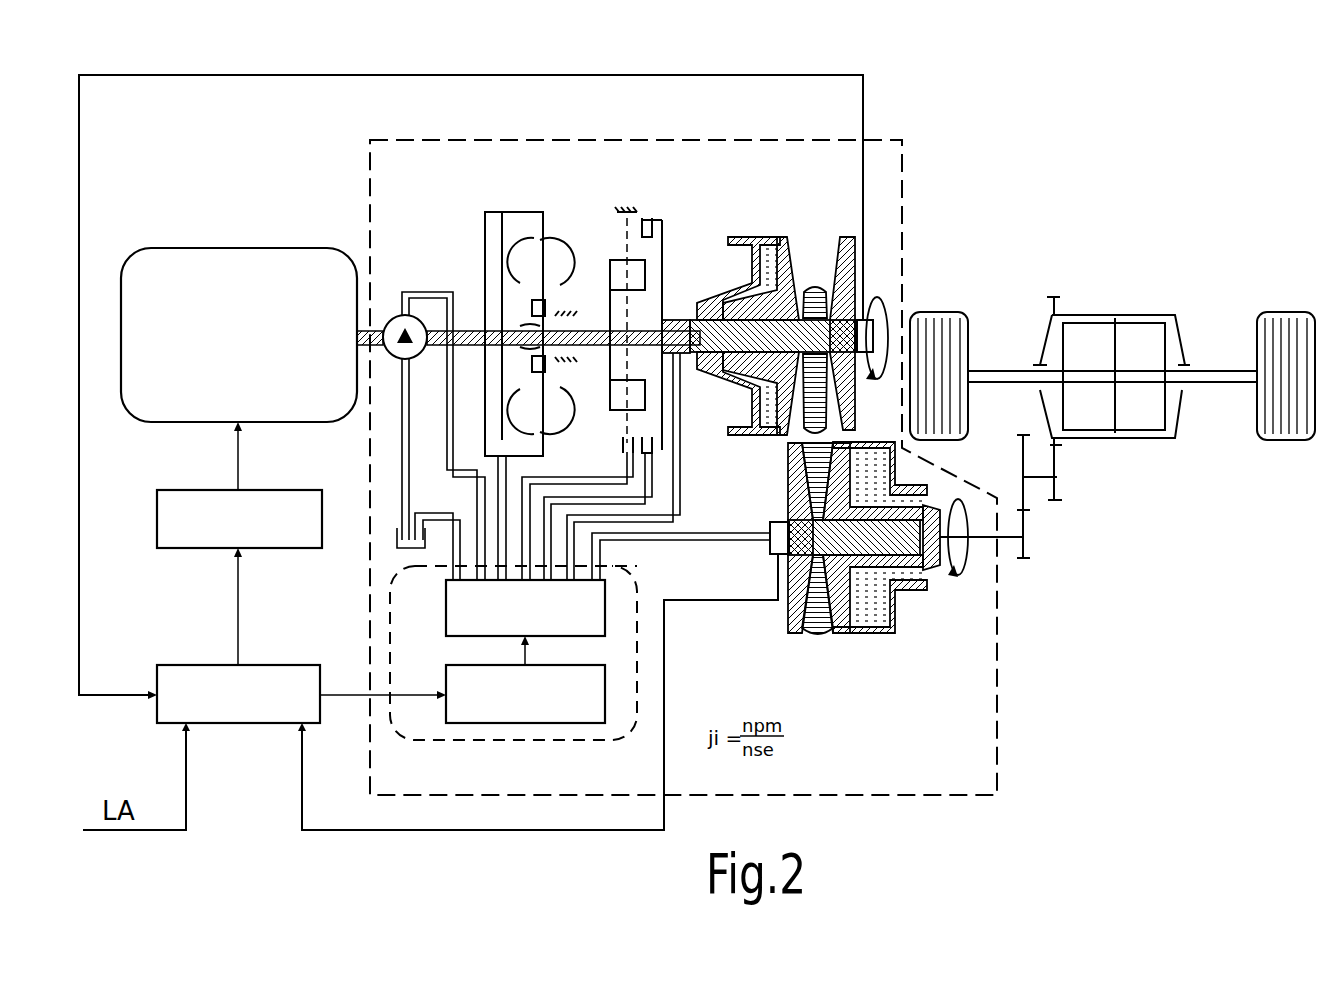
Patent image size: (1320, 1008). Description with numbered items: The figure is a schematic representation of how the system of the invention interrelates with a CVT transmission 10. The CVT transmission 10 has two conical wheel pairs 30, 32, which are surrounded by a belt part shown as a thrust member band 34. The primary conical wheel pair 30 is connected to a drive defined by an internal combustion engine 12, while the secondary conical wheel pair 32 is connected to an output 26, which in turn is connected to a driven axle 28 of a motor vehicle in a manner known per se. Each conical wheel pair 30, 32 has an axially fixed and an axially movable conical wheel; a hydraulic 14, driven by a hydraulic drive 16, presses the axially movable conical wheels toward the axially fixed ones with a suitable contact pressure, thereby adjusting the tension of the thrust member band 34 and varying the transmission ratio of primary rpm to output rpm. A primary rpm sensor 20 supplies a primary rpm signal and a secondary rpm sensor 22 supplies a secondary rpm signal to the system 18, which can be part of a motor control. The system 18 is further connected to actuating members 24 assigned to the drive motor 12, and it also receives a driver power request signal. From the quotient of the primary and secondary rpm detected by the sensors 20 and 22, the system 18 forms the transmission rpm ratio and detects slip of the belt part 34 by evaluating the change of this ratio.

The CVT transmission 10 is at (902, 153).
The internal combustion engine 12 is at (190, 316).
The hydraulic 14 is at (545, 625).
The hydraulic drive 16 is at (545, 709).
The system 18 is at (264, 712).
The primary rpm sensor 20 is at (865, 307).
The secondary rpm sensor 22 is at (775, 525).
The actuating members 24 is at (258, 537).
The output 26 is at (1032, 528).
The driven axle 28 is at (1212, 373).
The primary conical wheel pair 30 is at (848, 237).
The secondary conical wheel pair 32 is at (797, 635).
The thrust member band 34 is at (797, 443).